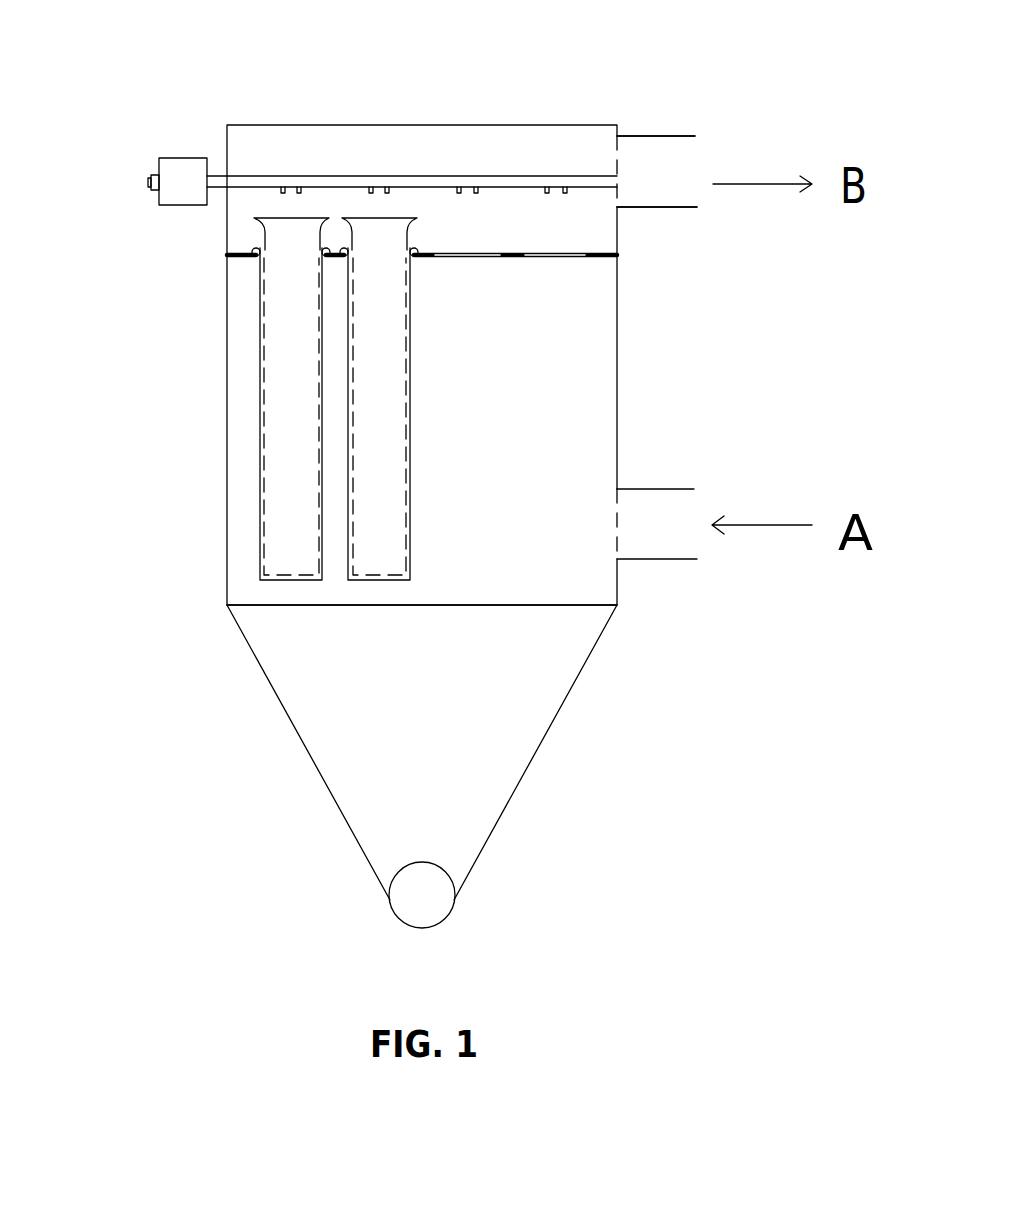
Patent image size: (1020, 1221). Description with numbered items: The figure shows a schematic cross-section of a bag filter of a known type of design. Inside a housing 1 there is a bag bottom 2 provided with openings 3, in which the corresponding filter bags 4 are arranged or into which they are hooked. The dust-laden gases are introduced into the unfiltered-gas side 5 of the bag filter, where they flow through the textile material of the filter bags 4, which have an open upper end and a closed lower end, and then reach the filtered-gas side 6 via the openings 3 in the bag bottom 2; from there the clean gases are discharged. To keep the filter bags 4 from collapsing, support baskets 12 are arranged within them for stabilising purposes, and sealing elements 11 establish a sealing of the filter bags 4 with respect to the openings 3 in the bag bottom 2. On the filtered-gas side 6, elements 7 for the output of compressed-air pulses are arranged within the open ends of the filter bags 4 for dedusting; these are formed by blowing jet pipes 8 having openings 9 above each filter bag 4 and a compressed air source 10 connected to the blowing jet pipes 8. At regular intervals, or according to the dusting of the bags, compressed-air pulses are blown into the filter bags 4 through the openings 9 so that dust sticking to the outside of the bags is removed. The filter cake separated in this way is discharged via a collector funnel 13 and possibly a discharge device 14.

The housing 1 is at (617, 422).
The bag bottom 2 is at (227, 257).
The openings 3 is at (555, 253).
The filter bags 4 is at (360, 516).
The unfiltered-gas side 5 is at (558, 362).
The filtered-gas side 6 is at (595, 221).
The elements for the output of compressed-air pulses 7 is at (587, 175).
The blowing jet pipes 8 is at (418, 182).
The openings 9 is at (299, 190).
The compressed air source 10 is at (168, 170).
The sealing elements 11 is at (253, 252).
The support baskets 12 is at (263, 418).
The collector funnel 13 is at (397, 755).
The discharge device 14 is at (410, 890).